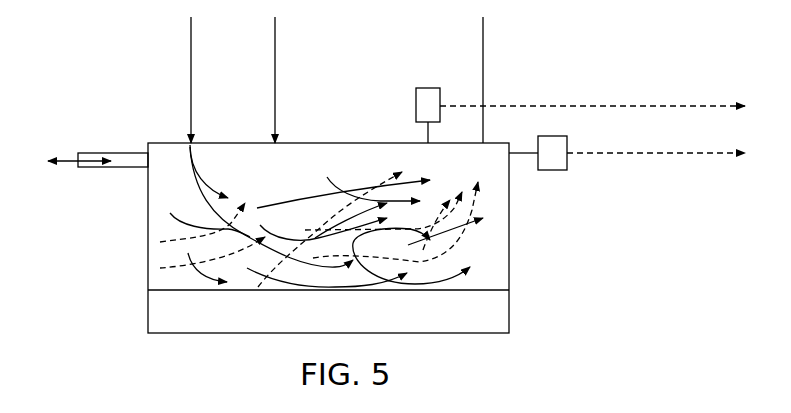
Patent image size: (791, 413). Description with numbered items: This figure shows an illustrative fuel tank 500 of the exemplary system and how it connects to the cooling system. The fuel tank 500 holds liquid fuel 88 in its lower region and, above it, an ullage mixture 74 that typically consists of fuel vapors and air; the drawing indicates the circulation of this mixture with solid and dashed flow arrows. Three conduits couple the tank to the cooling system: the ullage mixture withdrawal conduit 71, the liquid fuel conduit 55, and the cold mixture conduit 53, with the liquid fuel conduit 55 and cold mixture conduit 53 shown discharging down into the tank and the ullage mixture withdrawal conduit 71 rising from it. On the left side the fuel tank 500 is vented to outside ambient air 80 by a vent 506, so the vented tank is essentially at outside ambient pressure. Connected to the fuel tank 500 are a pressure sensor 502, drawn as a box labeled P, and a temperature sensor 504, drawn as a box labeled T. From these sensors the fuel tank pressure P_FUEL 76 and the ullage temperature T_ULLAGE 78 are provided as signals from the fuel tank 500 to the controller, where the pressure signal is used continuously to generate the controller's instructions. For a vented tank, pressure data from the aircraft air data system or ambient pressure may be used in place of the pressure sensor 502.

The cold mixture conduit 53 is at (191, 65).
The liquid fuel conduit 55 is at (275, 65).
The ullage mixture withdrawal conduit 71 is at (483, 33).
The ullage mixture 74 is at (435, 168).
The fuel tank pressure P_FUEL 76 is at (712, 105).
The ullage temperature T_ULLAGE 78 is at (713, 155).
The outside ambient air 80 is at (63, 153).
The liquid fuel 88 is at (403, 323).
The fuel tank 500 is at (147, 265).
The pressure sensor 502 is at (428, 88).
The temperature sensor 504 is at (552, 170).
The vent 506 is at (100, 168).